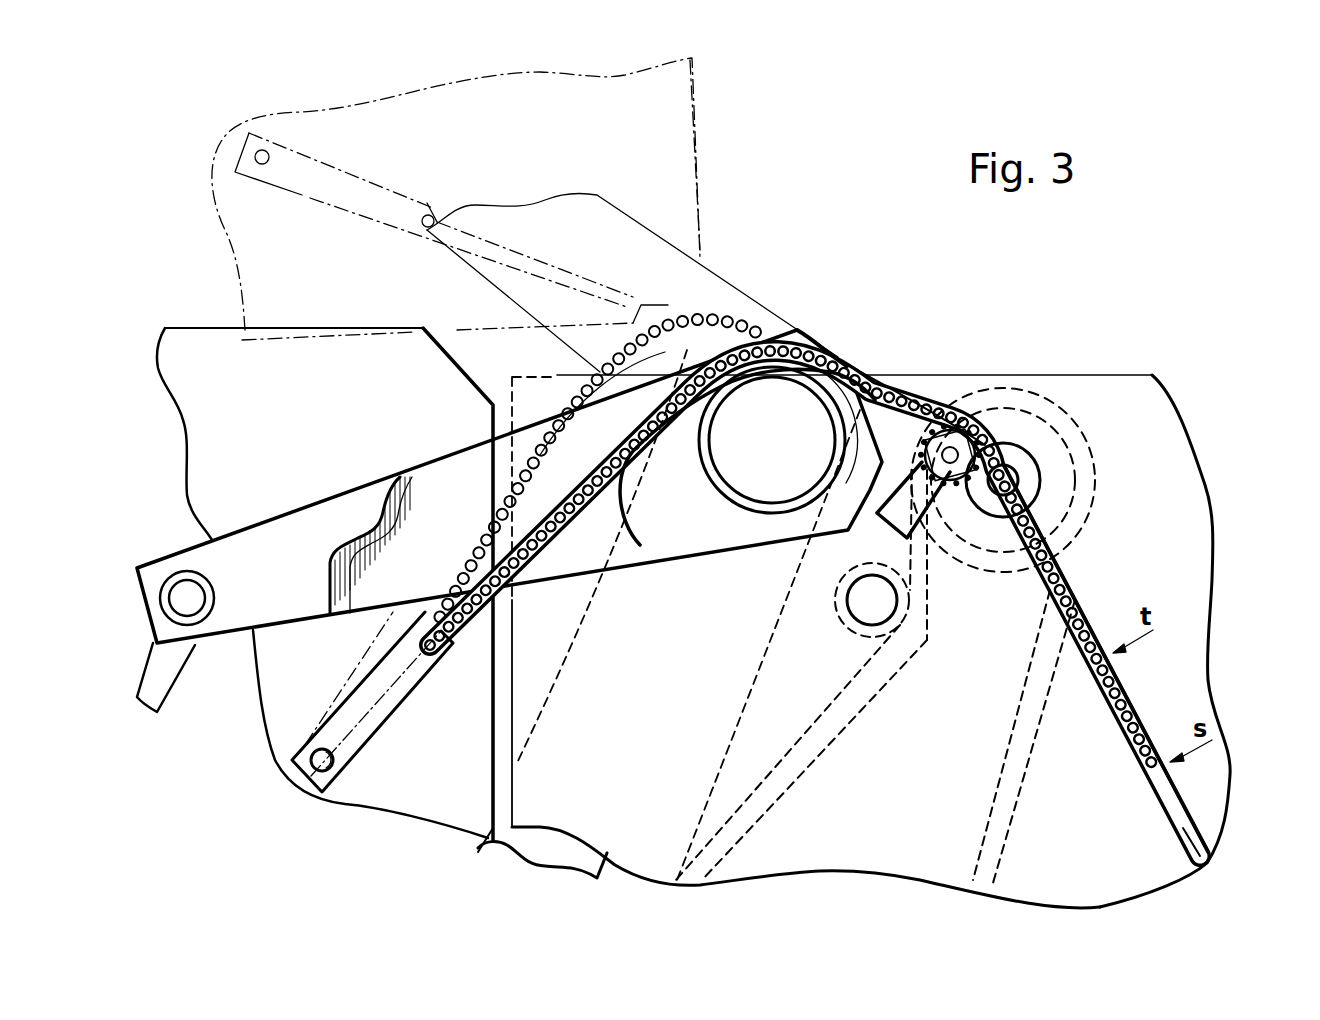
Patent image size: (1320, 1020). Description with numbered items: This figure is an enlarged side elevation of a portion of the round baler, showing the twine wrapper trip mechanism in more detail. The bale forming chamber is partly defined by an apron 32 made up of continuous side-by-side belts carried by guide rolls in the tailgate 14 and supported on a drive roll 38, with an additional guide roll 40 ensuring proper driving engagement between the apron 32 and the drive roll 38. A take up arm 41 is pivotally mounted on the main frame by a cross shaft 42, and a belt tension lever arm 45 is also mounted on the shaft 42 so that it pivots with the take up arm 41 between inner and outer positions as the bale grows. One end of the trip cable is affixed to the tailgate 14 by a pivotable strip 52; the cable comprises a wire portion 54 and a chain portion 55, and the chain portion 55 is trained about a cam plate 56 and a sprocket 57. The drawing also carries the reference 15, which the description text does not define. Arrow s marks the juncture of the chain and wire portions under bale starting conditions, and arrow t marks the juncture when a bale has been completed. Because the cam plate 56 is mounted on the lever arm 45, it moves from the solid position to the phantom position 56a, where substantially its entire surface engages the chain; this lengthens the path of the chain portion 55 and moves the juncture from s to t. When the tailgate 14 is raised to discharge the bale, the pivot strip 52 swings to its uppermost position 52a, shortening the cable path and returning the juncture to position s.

The tailgate 14 is at (192, 417).
The chain 15 is at (532, 483).
The apron 32 is at (1013, 800).
The drive roll 38 is at (1050, 457).
The guide roll 40 is at (840, 623).
The take up arm 41 is at (483, 845).
The cross shaft 42 is at (830, 450).
The belt tension lever arm 45 is at (330, 508).
The pivotable strip 52 is at (393, 705).
The uppermost position of pivot strip 52a is at (302, 195).
The wire portion 54 is at (1183, 828).
The chain portion 55 is at (908, 395).
The cam plate 56 is at (645, 470).
The phantom position of cam plate 56a is at (633, 345).
The sprocket 57 is at (955, 490).